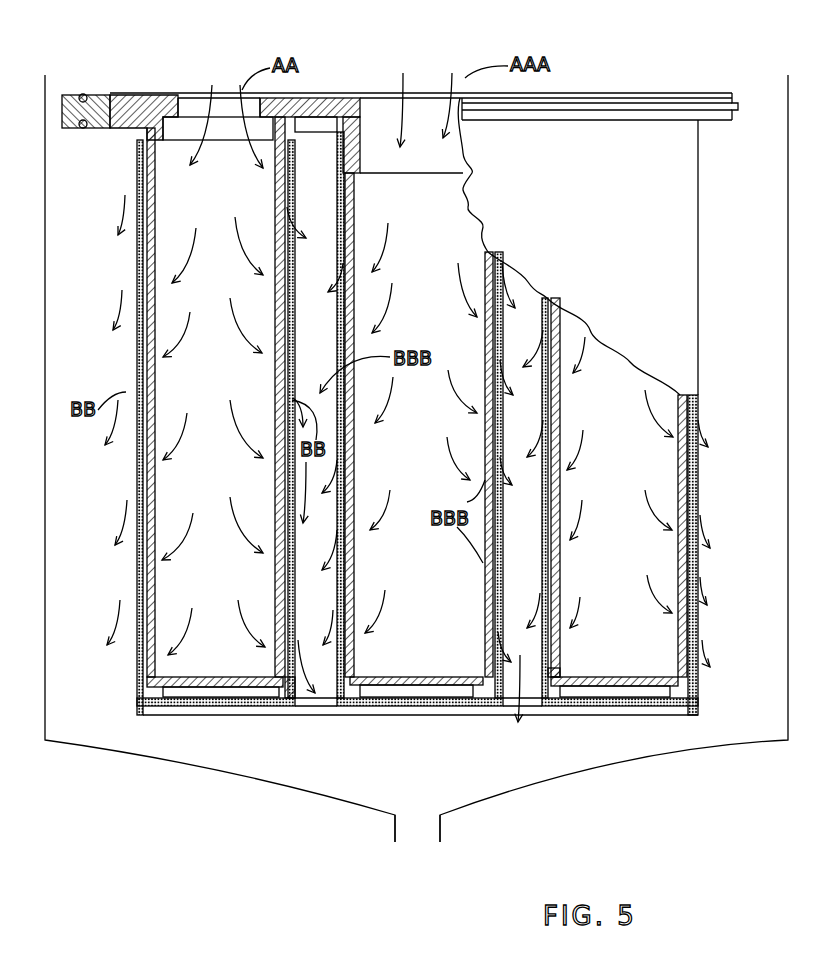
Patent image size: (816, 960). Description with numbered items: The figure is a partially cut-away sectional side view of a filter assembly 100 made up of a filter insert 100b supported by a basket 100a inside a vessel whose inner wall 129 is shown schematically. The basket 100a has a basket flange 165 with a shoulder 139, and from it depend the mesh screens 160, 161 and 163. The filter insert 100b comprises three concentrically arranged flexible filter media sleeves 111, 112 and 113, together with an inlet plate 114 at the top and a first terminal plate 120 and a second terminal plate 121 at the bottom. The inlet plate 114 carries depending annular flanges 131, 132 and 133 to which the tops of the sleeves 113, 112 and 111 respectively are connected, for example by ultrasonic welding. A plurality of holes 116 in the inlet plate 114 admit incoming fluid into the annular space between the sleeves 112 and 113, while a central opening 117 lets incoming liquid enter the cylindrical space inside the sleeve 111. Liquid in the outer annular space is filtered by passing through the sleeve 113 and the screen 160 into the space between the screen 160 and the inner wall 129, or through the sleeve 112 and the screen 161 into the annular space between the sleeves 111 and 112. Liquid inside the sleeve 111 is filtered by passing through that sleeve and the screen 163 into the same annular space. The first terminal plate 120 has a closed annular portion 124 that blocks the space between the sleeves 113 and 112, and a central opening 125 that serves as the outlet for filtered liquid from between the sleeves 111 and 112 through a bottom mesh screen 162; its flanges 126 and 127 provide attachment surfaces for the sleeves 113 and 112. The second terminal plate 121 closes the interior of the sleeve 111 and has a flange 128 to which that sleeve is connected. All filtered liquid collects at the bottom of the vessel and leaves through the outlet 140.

The filter assembly 100 is at (108, 262).
The basket 100a is at (124, 150).
The filter insert 100b is at (273, 497).
The filter media sleeve 111 is at (368, 580).
The filter media sleeve 112 is at (273, 572).
The filter media sleeve 113 is at (137, 562).
The inlet plate 114 is at (338, 93).
The openings or holes 116 is at (220, 112).
The central opening 117 is at (386, 103).
The first terminal plate 120 is at (193, 693).
The second terminal plate 121 is at (440, 677).
The closed annular portion 124 is at (245, 676).
The central opening 125 is at (330, 692).
The flange 126 is at (158, 703).
The flange 127 is at (293, 693).
The flange 128 is at (355, 703).
The inner wall of the vessel 129 is at (787, 300).
The depending annular flange 131 is at (217, 370).
The depending annular flange 132 is at (290, 148).
The depending annular flange 133 is at (365, 168).
The shoulder 139 is at (115, 128).
The outlet 140 is at (403, 828).
The mesh screen 160 is at (137, 375).
The mesh screen 161 is at (292, 303).
The bottom mesh screen 162 is at (397, 708).
The mesh screen 163 is at (338, 353).
The basket flange 165 is at (112, 93).